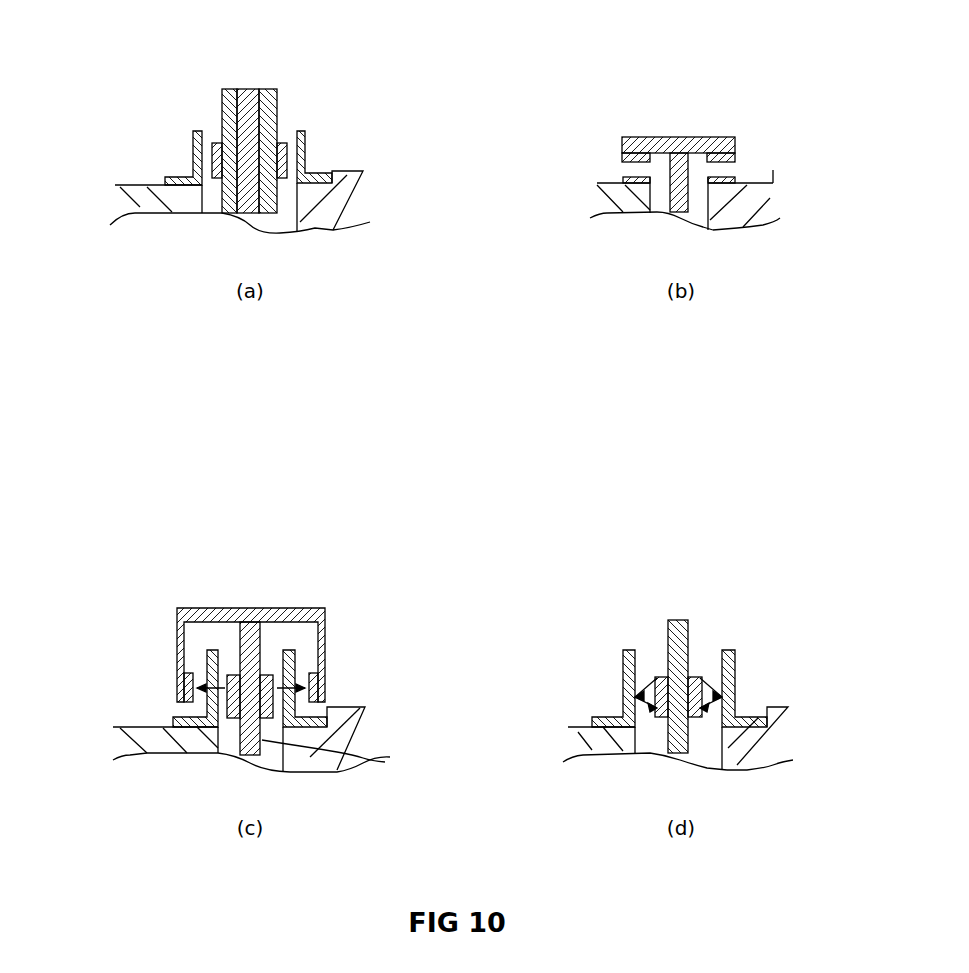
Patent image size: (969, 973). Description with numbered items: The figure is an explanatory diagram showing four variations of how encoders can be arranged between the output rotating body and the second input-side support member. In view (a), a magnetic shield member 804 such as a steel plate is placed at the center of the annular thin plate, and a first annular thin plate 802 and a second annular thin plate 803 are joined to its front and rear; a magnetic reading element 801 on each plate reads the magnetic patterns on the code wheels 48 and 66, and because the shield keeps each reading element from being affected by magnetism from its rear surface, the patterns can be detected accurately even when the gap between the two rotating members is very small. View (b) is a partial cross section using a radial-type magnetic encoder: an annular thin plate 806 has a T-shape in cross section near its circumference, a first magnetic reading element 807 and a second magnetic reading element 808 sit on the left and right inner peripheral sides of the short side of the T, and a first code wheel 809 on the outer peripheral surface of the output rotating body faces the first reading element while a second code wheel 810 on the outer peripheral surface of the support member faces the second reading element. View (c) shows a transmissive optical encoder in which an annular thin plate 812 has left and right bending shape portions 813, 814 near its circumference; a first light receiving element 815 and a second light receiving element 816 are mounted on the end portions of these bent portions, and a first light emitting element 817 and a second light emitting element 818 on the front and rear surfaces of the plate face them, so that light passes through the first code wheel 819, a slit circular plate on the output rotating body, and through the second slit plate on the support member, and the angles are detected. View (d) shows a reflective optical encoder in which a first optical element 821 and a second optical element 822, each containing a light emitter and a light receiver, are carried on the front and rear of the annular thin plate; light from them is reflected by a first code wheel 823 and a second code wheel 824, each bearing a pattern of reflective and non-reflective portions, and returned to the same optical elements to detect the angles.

The code wheel 48 is at (193, 143).
The code wheel 66 is at (307, 143).
The magnetic reading element 801 is at (217, 143).
The first annular thin plate 802 is at (232, 89).
The second annular thin plate 803 is at (267, 89).
The magnetic shield member 804 is at (247, 89).
The annular thin plate 806 is at (687, 138).
The first magnetic reading element 807 is at (622, 155).
The second magnetic reading element 808 is at (737, 152).
The first code wheel 809 is at (622, 179).
The second code wheel 810 is at (740, 180).
The annular thin plate 812 is at (385, 762).
The left frame portion 813 is at (177, 638).
The right frame portion 814 is at (327, 622).
The first light receiving element 815 is at (177, 658).
The second light receiving element 816 is at (325, 660).
The first light emitting element 817 is at (228, 675).
The second light emitting element 818 is at (268, 675).
The first code wheel (slit circular plate) 819 is at (205, 650).
The first optical element 821 is at (660, 677).
The second optical element 822 is at (695, 677).
The first code wheel 823 is at (623, 678).
The second code wheel 824 is at (735, 678).